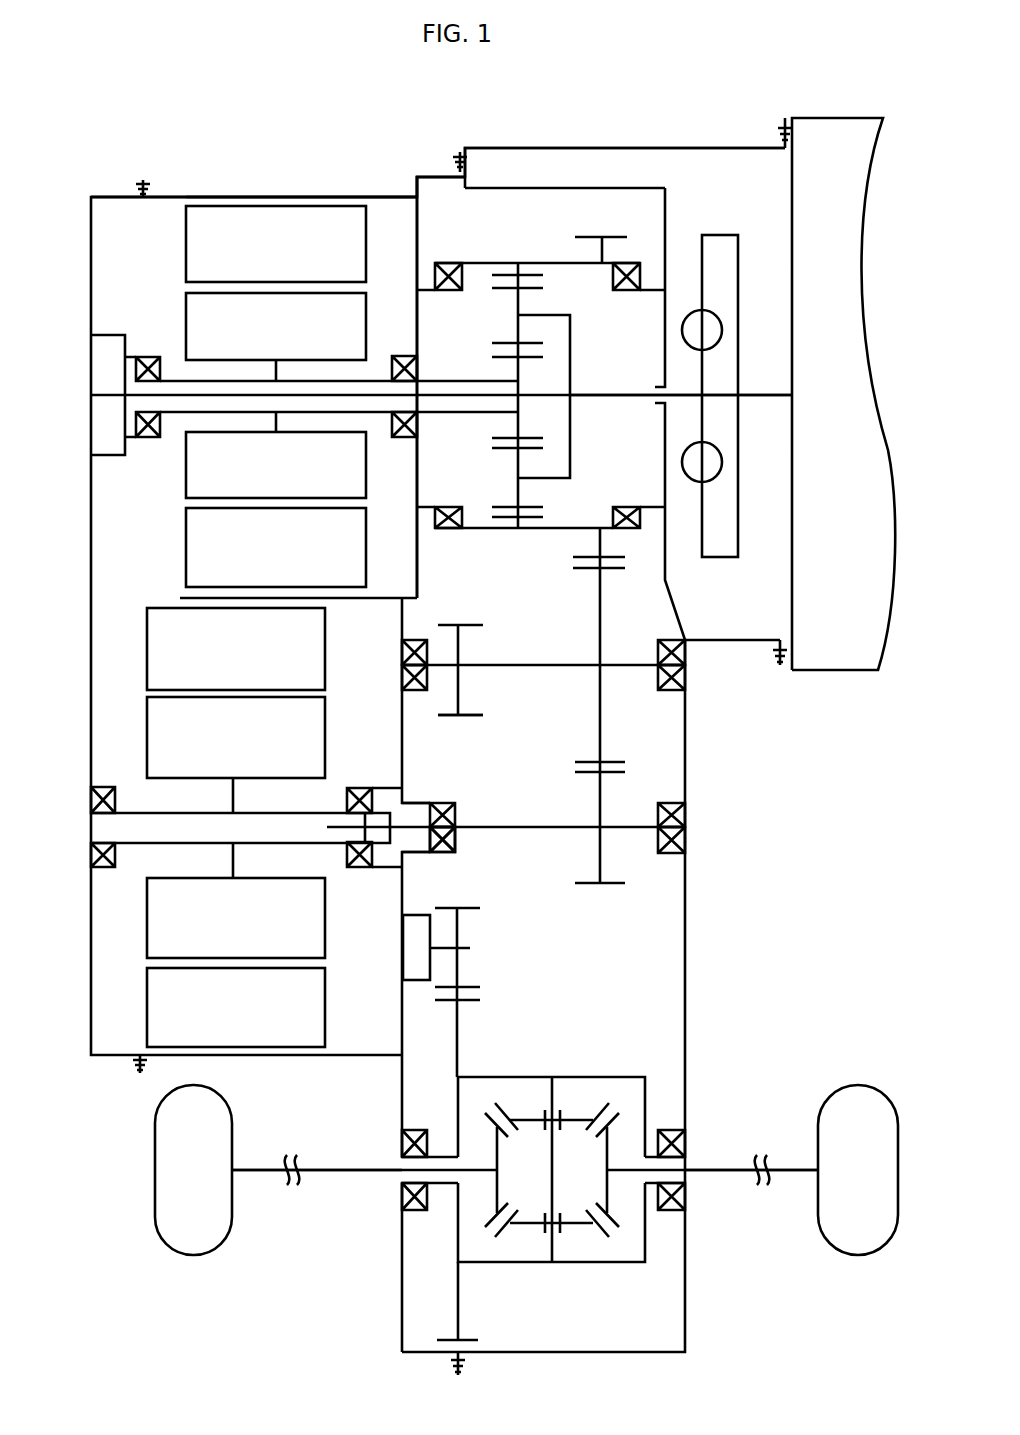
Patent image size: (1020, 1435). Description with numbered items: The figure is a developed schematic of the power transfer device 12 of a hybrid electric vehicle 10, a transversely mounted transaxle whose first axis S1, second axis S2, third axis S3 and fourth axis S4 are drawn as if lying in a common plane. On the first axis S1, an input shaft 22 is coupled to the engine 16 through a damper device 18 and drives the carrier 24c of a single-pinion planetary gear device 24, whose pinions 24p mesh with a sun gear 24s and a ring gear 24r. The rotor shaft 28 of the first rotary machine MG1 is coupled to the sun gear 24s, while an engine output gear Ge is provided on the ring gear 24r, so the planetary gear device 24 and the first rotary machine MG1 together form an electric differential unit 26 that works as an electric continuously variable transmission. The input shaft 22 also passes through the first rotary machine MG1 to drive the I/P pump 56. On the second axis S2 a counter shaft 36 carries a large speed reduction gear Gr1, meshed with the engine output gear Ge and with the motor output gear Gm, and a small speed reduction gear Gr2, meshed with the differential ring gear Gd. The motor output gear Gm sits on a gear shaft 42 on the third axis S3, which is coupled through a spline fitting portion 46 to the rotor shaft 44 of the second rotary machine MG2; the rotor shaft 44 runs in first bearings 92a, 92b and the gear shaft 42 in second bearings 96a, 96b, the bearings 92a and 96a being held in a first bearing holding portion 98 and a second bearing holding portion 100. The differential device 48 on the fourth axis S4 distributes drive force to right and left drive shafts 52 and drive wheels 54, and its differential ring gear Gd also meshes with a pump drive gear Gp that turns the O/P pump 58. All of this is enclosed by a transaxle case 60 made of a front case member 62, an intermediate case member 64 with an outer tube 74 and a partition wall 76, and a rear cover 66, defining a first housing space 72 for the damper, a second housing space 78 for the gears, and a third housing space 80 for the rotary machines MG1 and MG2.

The hybrid electric vehicle 10 is at (705, 105).
The power transfer device 12 is at (652, 1292).
The engine 16 is at (848, 130).
The damper device 18 is at (740, 258).
The input shaft 22 is at (593, 400).
The planetary gear device 24 is at (503, 537).
The carrier 24c is at (570, 345).
The pinions 24p is at (490, 515).
The ring gear 24r is at (535, 285).
The sun gear 24s is at (495, 440).
The electric differential unit 26 is at (520, 210).
The rotor shaft 28 is at (443, 381).
The counter shaft 36 is at (532, 663).
The gear shaft 42 is at (527, 833).
The rotor shaft 44 is at (150, 810).
The spline fitting portion 46 is at (335, 805).
The differential device 48 is at (510, 1262).
The drive shafts 52 is at (335, 1172).
The drive wheels 54 is at (197, 1233).
The I/P pump 56 is at (108, 345).
The O/P pump 58 is at (405, 960).
The transaxle case 60 is at (195, 140).
The front case member 62 is at (655, 148).
The intermediate case member 64 is at (362, 168).
The rear cover 66 is at (75, 245).
The first housing space 72 is at (731, 618).
The outer tube 74 is at (320, 197).
The partition wall 76 is at (415, 310).
The second housing space 78 is at (443, 230).
The third housing space 80 is at (116, 256).
The first bearing 92a is at (355, 870).
The first bearing 92b is at (100, 858).
The second bearing 96a is at (442, 855).
The second bearing 96b is at (680, 810).
The first bearing holding portion 98 is at (380, 790).
The second bearing holding portion 100 is at (420, 802).
The first rotary machine MG1 is at (272, 195).
The second rotary machine MG2 is at (115, 995).
The first axis S1 is at (419, 395).
The second axis S2 is at (564, 665).
The third axis S3 is at (217, 828).
The fourth axis S4 is at (466, 1170).
The engine output gear Ge is at (602, 237).
The large speed reduction gear Gr1 is at (622, 765).
The small speed reduction gear Gr2 is at (480, 715).
The motor output gear Gm is at (592, 888).
The pump drive gear Gp is at (470, 908).
The differential ring gear Gd is at (445, 1338).